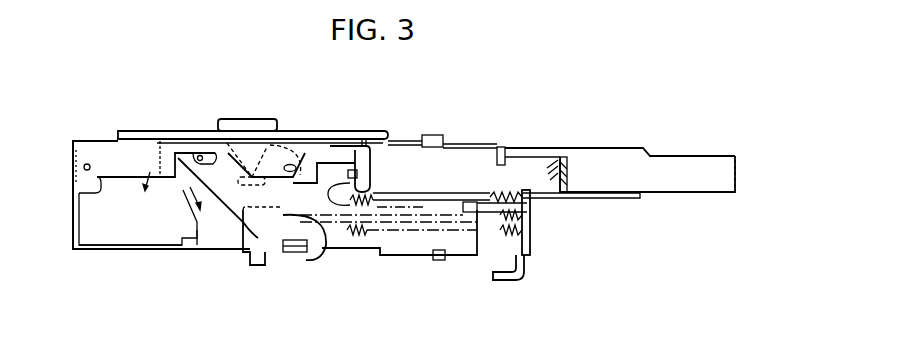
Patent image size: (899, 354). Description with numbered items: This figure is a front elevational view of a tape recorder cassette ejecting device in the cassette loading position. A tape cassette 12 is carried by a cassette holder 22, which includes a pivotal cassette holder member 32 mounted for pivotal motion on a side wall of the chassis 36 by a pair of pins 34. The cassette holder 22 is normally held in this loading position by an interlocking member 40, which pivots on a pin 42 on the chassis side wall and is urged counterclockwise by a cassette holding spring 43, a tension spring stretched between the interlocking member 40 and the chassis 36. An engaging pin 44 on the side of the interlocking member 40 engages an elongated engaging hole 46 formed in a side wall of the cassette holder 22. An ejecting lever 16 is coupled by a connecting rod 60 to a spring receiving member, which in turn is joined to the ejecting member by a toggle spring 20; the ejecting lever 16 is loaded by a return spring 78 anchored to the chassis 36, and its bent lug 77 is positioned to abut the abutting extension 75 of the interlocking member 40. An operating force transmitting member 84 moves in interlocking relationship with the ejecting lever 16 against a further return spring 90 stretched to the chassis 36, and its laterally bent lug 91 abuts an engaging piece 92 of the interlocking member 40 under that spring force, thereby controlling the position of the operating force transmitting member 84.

The tape cassette 12 is at (612, 160).
The ejecting lever 16 is at (540, 147).
The toggle spring 20 is at (262, 120).
The cassette holder 22 is at (93, 136).
The pivotal cassette holder member 32 is at (113, 142).
The pins 34 is at (83, 167).
The chassis 36 is at (116, 250).
The interlocking member 40 is at (220, 235).
The pin 42 is at (310, 142).
The cassette holding spring 43 is at (532, 218).
The engaging pin 44 is at (192, 156).
The elongated engaging hole 46 is at (203, 153).
The connecting rod 60 is at (363, 132).
The abutting extension 75 is at (365, 177).
The bent lug 77 is at (343, 165).
The return spring 78 is at (530, 199).
The operating force transmitting member 84 is at (362, 257).
The return spring 90 is at (532, 245).
The laterally bent lug 91 is at (297, 258).
The engaging piece 92 is at (320, 256).